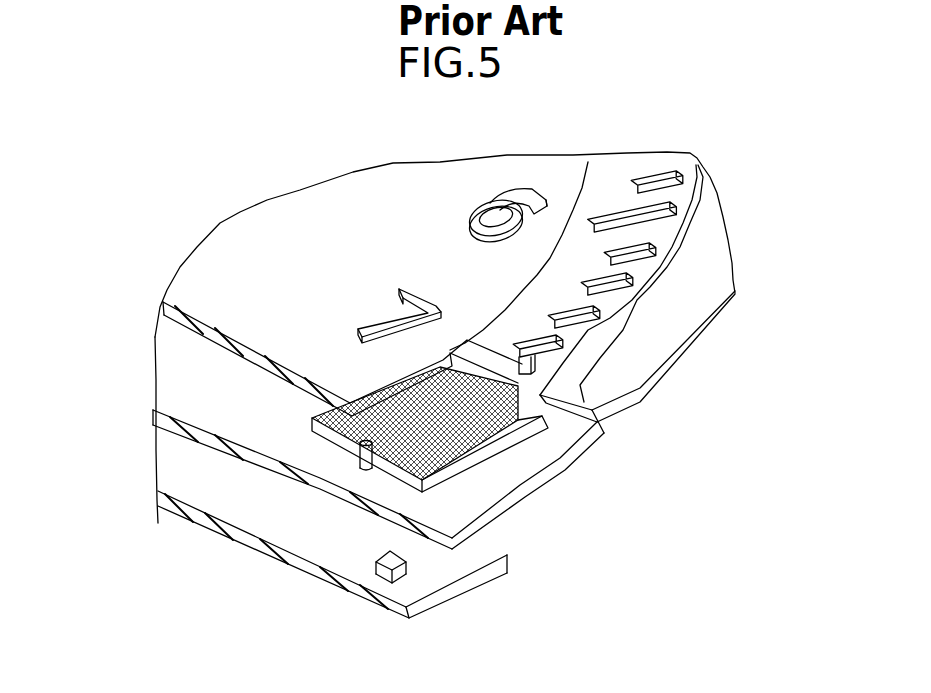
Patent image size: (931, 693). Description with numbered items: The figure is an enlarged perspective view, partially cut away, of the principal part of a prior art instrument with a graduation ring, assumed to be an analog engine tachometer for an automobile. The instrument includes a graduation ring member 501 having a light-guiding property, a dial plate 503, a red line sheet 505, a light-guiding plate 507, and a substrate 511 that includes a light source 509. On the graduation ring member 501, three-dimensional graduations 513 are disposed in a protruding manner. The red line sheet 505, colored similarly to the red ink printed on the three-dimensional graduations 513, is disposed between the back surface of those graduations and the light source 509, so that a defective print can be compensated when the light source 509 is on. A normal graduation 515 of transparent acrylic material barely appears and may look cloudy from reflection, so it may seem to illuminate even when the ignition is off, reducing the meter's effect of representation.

The graduation ring member 501 is at (655, 282).
The dial plate 503 is at (367, 195).
The red line sheet 505 is at (457, 432).
The light-guiding plate 507 is at (185, 378).
The light source 509 is at (377, 567).
The substrate 511 is at (185, 480).
The three-dimensional graduations 513 is at (572, 350).
The normal graduation 515 is at (612, 210).